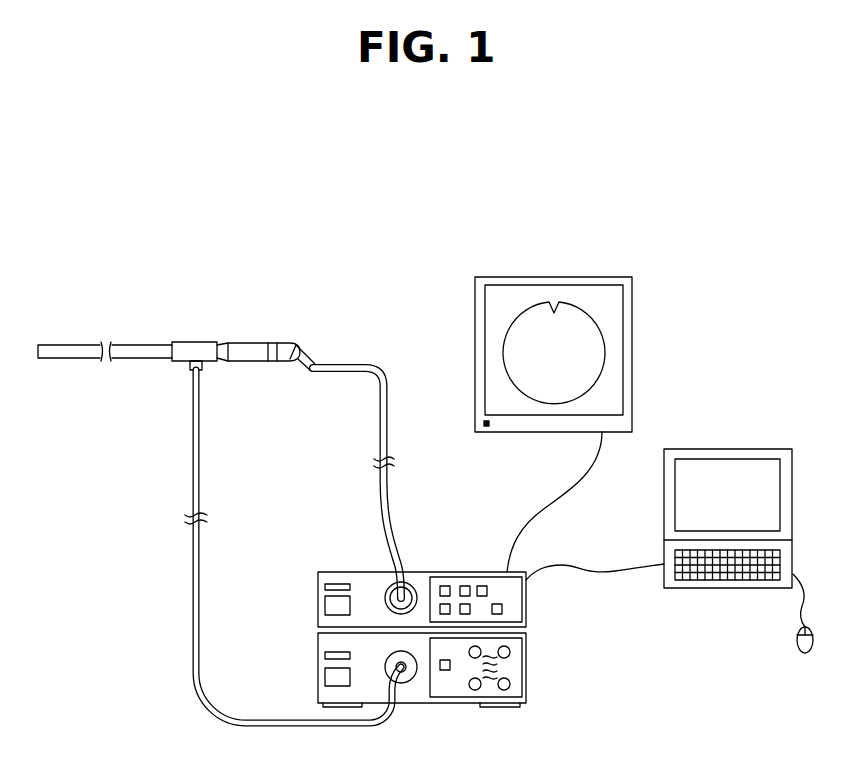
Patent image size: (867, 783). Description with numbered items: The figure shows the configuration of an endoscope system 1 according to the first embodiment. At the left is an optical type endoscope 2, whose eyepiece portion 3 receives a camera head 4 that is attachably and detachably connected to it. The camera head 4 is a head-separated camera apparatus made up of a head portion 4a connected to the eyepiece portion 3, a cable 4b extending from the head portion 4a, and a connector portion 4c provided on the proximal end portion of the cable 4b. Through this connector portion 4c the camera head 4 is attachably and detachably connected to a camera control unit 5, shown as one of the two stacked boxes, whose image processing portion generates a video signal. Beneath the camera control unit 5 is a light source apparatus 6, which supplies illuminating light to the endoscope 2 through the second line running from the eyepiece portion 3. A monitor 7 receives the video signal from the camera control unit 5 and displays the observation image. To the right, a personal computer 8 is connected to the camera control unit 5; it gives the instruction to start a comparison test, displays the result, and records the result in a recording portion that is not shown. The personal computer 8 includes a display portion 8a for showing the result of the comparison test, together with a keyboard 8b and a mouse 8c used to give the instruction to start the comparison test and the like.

The endoscope system 1 is at (445, 213).
The optical type endoscope 2 is at (122, 377).
The eyepiece portion 3 is at (223, 343).
The camera head 4 is at (338, 339).
The head portion 4a is at (273, 343).
The cable 4b is at (377, 371).
The connector portion 4c is at (413, 582).
The camera control unit 5 is at (527, 600).
The light source apparatus 6 is at (527, 669).
The monitor 7 is at (555, 277).
The personal computer 8 is at (729, 449).
The display portion 8a is at (770, 459).
The keyboard 8b is at (717, 580).
The mouse 8c is at (805, 654).